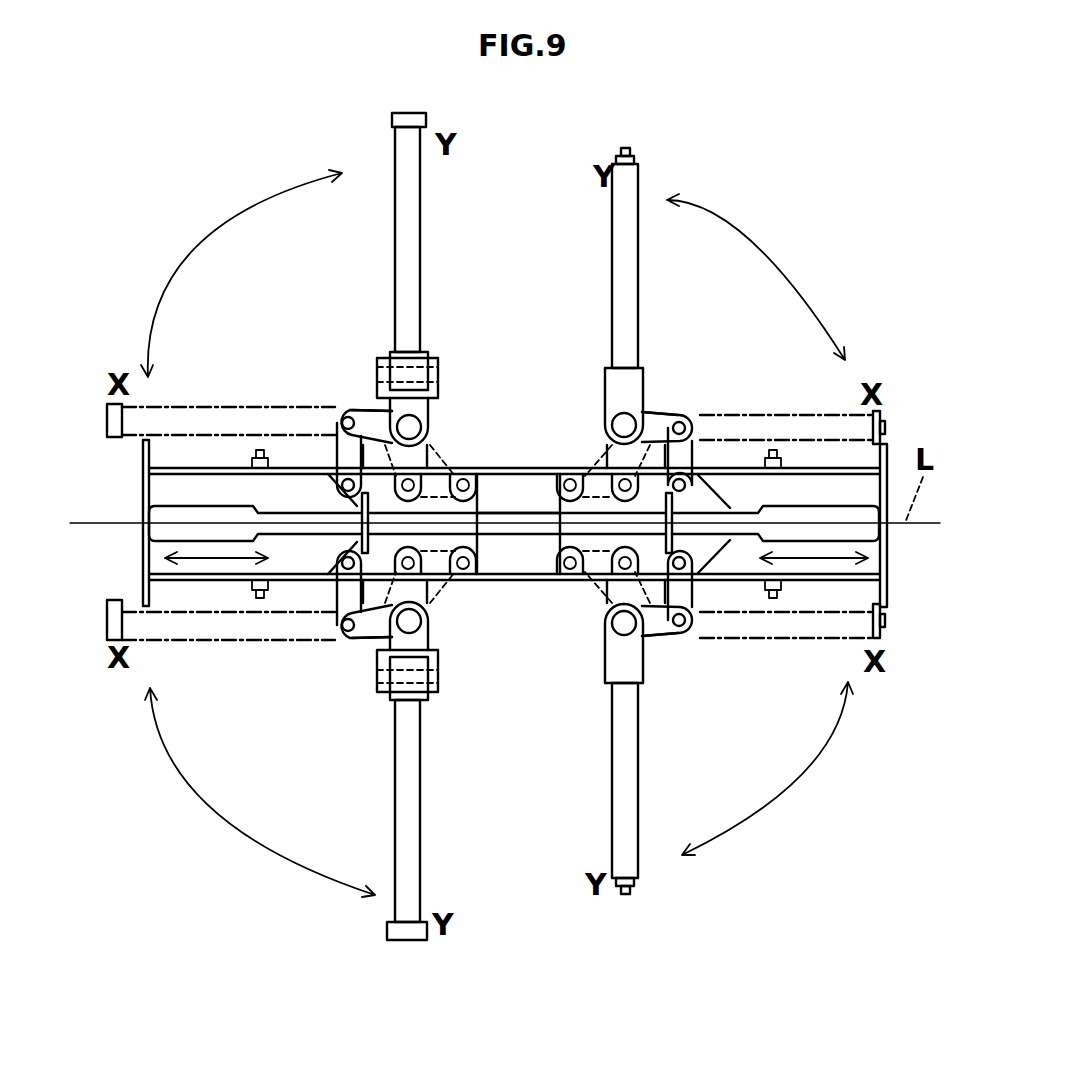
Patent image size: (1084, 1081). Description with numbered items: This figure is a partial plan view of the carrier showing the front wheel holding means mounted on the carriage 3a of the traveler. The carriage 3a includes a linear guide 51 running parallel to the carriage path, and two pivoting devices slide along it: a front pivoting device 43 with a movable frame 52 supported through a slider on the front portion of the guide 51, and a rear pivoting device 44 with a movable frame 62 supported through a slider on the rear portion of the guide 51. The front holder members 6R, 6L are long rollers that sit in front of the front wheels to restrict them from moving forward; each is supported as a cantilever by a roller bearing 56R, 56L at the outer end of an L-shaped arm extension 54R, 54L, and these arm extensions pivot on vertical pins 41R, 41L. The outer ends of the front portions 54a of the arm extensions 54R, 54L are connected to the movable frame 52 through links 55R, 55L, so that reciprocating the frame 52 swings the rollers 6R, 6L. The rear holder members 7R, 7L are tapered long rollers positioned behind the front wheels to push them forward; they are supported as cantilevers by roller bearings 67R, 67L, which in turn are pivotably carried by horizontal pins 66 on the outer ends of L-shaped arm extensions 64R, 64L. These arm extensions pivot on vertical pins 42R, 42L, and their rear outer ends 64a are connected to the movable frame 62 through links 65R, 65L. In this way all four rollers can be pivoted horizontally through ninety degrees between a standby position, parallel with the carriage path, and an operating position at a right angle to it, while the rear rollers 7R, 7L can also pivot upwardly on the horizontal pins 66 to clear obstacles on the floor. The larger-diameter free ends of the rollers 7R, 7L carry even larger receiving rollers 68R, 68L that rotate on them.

The carriage 3a is at (537, 600).
The front holder member 6L is at (625, 230).
The front holder member 6R is at (625, 832).
The rear holder member 7L is at (410, 232).
The rear holder member 7R is at (410, 848).
The vertical pin 41L is at (612, 425).
The vertical pin 41R is at (617, 627).
The vertical pin 42L is at (417, 423).
The vertical pin 42R is at (420, 622).
The front pivoting device 43 is at (730, 560).
The rear pivoting device 44 is at (288, 488).
The linear guide 51 is at (521, 520).
The movable frame 52 is at (867, 533).
The L-shaped arm extension 54L is at (650, 405).
The L-shaped arm extension 54R is at (650, 640).
The front portion 54a is at (668, 410).
The link 55L is at (688, 450).
The link 55R is at (690, 630).
The roller bearing 56L is at (618, 372).
The roller bearing 56R is at (618, 668).
The movable frame 62 is at (227, 535).
The L-shaped arm extension 64L is at (372, 412).
The L-shaped arm extension 64R is at (370, 637).
The rear outer end 64a is at (352, 412).
The link 65L is at (340, 428).
The link 65R is at (350, 632).
The horizontal pin 66 is at (438, 372).
The roller bearing 67L is at (407, 358).
The roller bearing 67R is at (408, 695).
The receiving roller 68L is at (392, 121).
The receiving roller 68R is at (388, 930).